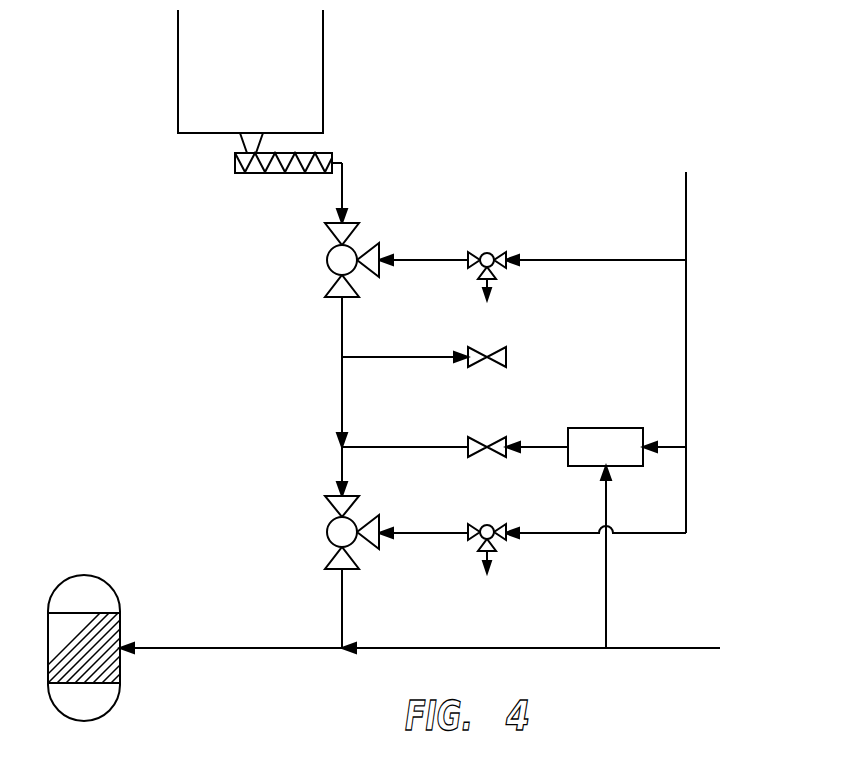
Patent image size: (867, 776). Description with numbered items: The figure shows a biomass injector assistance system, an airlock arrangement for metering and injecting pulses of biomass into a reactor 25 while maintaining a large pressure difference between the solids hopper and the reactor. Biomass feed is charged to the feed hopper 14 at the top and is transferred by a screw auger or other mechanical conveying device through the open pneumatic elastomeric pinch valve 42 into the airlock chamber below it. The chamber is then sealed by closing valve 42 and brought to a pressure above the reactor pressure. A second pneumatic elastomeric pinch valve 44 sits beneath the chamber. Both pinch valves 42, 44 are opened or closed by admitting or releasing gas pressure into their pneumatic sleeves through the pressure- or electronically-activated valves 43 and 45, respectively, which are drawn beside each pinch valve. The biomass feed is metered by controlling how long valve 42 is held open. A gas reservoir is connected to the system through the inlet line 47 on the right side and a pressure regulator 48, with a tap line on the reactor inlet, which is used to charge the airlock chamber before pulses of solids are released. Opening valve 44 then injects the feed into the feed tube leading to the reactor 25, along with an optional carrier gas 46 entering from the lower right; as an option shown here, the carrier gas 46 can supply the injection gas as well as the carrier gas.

The feed hopper 14 is at (190, 95).
The reactor 25 is at (122, 622).
The pneumatic elastomeric pinch valve 42 is at (326, 263).
The pressure- or electronically-activated valve 43 is at (490, 252).
The pneumatic elastomeric pinch valve 44 is at (327, 522).
The pressure- or electronically-activated valve 45 is at (500, 540).
The carrier gas 46 is at (715, 642).
The inlet line 47 is at (688, 200).
The pressure regulator 48 is at (628, 432).